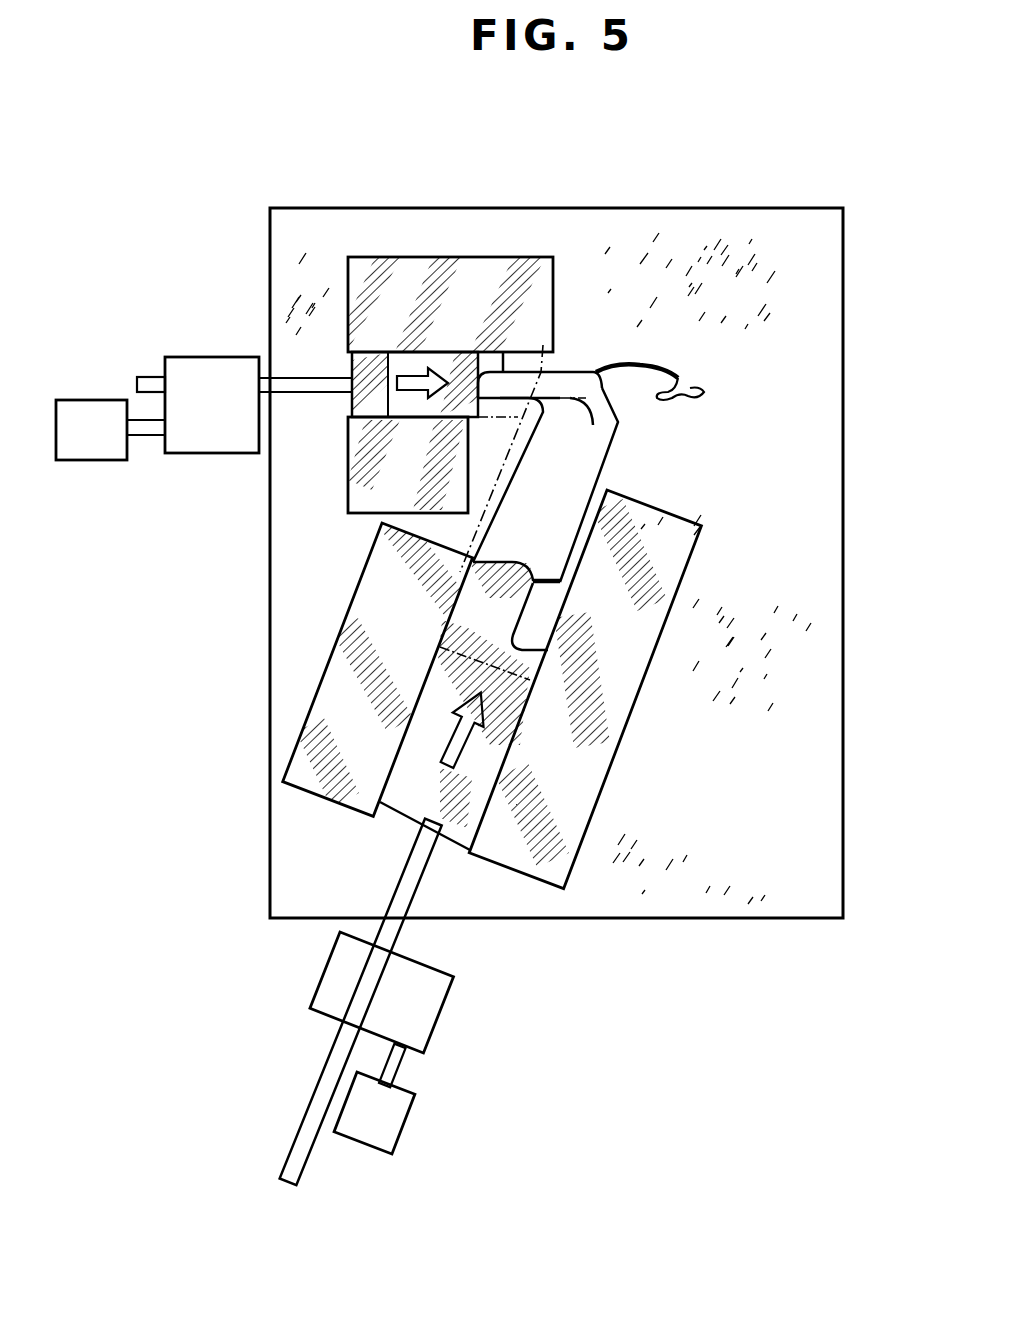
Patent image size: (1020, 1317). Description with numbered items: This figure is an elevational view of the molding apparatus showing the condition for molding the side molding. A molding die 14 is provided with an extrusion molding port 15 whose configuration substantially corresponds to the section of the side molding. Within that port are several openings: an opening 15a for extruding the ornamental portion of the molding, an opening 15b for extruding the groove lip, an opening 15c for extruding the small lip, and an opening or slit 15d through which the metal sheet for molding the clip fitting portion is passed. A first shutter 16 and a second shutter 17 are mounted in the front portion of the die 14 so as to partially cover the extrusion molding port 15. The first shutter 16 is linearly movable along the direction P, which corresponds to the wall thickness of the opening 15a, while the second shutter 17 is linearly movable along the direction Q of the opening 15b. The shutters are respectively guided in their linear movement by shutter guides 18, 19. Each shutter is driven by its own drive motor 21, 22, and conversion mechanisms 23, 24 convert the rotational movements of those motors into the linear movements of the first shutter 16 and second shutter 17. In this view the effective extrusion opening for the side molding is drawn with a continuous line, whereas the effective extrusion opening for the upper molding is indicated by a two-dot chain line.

The molding die 14 is at (826, 337).
The extrusion molding port 15 is at (624, 447).
The opening 15a is at (560, 508).
The opening 15b is at (563, 371).
The opening 15c is at (703, 392).
The opening (slit) 15d is at (645, 368).
The first shutter 16 is at (428, 822).
The second shutter 17 is at (418, 410).
The shutter guide 18 is at (333, 690).
The shutter guide 19 is at (487, 268).
The drive motor 21 is at (392, 1120).
The drive motor 22 is at (92, 450).
The conversion mechanism 23 is at (424, 1016).
The conversion mechanism 24 is at (210, 440).